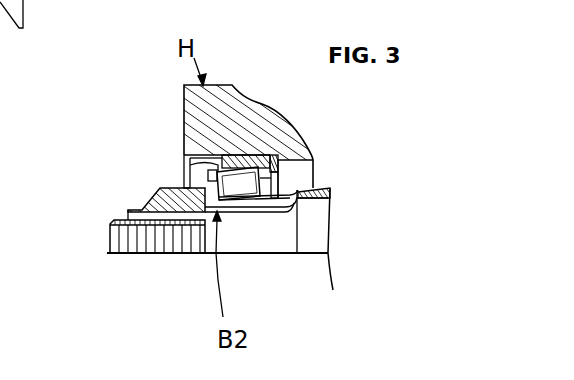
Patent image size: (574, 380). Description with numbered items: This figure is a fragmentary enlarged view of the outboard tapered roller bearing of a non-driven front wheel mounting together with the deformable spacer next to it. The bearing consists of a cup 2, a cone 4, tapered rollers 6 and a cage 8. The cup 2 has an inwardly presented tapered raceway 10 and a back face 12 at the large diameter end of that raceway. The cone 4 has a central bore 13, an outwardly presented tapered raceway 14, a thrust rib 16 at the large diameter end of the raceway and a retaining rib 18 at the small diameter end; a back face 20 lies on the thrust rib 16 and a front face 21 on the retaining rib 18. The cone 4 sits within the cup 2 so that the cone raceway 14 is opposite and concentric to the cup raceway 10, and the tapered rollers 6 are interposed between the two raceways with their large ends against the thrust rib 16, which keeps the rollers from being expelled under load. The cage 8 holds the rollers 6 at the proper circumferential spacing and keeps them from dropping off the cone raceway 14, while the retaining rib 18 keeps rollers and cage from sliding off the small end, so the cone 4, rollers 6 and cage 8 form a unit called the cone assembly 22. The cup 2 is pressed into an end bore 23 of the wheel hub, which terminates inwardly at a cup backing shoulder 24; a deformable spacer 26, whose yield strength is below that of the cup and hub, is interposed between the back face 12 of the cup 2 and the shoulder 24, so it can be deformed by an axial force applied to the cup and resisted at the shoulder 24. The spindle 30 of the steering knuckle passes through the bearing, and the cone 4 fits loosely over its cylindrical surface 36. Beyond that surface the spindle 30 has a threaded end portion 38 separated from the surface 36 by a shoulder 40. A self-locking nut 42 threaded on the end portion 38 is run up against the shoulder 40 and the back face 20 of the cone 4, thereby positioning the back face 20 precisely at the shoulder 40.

The cup 2 is at (247, 160).
The cone 4 is at (235, 213).
The tapered rollers 6 is at (238, 183).
The cage 8 is at (190, 165).
The tapered raceway 10 is at (240, 143).
The back face 12 is at (312, 150).
The central bore 13 is at (290, 232).
The tapered raceway 14 is at (253, 195).
The thrust rib 16 is at (208, 183).
The retaining rib 18 is at (290, 177).
The back face 20 is at (160, 190).
The front face 21 is at (300, 203).
The cone assembly 22 is at (278, 171).
The end bore 23 is at (184, 159).
The cup backing shoulder 24 is at (277, 157).
The deformable spacer 26 is at (275, 157).
The spindle 30 is at (312, 242).
The cylindrical surface 36 is at (297, 253).
The threaded end portion 38 is at (140, 255).
The shoulder 40 is at (188, 255).
The nut 42 is at (158, 207).